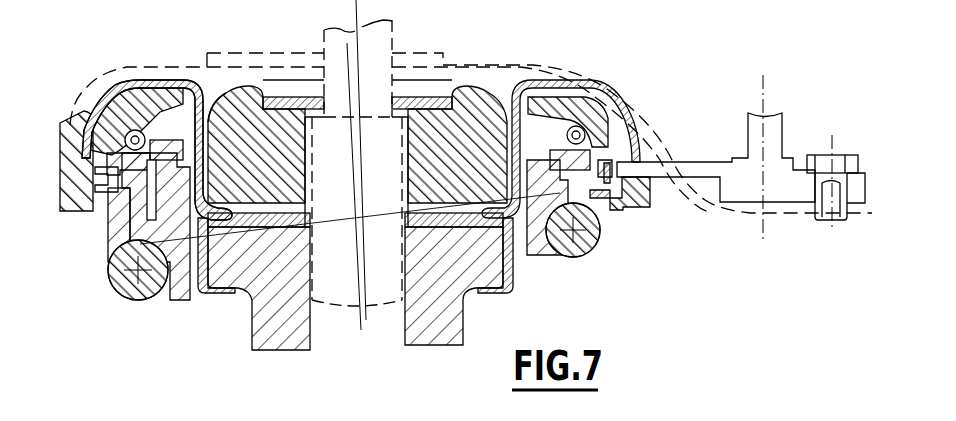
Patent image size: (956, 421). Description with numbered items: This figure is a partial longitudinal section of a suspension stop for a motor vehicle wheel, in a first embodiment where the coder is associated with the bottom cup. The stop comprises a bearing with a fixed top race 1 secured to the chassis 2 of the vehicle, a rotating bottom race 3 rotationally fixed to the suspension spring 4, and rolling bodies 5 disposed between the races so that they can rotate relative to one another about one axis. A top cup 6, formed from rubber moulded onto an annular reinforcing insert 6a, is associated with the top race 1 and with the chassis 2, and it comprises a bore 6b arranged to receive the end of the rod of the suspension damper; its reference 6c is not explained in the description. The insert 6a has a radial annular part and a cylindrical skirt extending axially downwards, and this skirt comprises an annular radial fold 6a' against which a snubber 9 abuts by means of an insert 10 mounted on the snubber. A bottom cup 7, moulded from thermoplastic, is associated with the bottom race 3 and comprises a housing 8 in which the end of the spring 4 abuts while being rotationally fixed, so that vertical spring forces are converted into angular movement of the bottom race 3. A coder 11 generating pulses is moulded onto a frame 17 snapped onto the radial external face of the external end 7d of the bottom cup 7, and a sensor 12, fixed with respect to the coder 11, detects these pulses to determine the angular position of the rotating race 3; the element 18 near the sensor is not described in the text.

The fixed top race 1 is at (173, 93).
The chassis 2 is at (490, 60).
The rotating bottom race 3 is at (115, 190).
The suspension spring 4 is at (126, 292).
The rolling bodies 5 is at (112, 110).
The top cup 6 is at (255, 93).
The annular reinforcing insert 6a is at (214, 62).
The annular radial fold 6a' is at (344, 281).
The bore 6b is at (365, 307).
The hub clip block 6c is at (627, 207).
The bottom cup 7 is at (117, 228).
The external end 7d is at (603, 245).
The housing 8 is at (157, 268).
The snubber 9 is at (282, 326).
The insert 10 is at (248, 295).
The coder 11 is at (117, 177).
The sensor 12 is at (684, 162).
The frame 17 is at (88, 212).
The bolt 18 is at (830, 167).